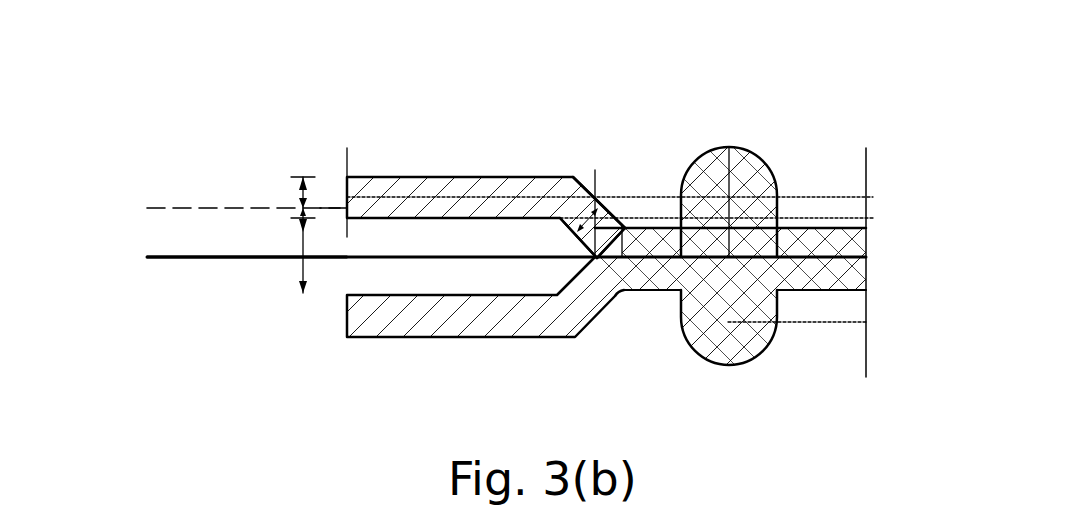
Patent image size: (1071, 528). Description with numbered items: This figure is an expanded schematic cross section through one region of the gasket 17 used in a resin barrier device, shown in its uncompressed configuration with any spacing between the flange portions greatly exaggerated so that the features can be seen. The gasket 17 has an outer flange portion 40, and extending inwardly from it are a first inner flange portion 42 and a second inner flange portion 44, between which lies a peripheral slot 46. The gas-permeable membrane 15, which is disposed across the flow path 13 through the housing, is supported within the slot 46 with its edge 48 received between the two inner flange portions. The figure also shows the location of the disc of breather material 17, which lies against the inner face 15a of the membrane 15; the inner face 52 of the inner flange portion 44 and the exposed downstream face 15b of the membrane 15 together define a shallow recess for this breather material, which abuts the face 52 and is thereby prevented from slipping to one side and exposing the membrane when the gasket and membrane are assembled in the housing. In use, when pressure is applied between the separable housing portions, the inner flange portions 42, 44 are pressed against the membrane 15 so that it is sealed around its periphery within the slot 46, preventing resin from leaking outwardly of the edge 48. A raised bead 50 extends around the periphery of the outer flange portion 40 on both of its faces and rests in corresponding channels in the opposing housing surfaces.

The flow path 13 is at (105, 290).
The gas-permeable membrane 15 is at (240, 314).
The inner face of the membrane 15a is at (196, 256).
The exposed downstream face of the membrane 15b is at (160, 259).
The gasket 17 is at (238, 198).
The outer flange portion 40 is at (798, 391).
The first inner flange portion 42 is at (458, 317).
The second inner flange portion 44 is at (455, 168).
The peripheral slot 46 is at (348, 292).
The edge of the membrane 48 is at (592, 268).
The raised bead 50 is at (743, 174).
The inner face of the inner flange portion 52 is at (347, 185).